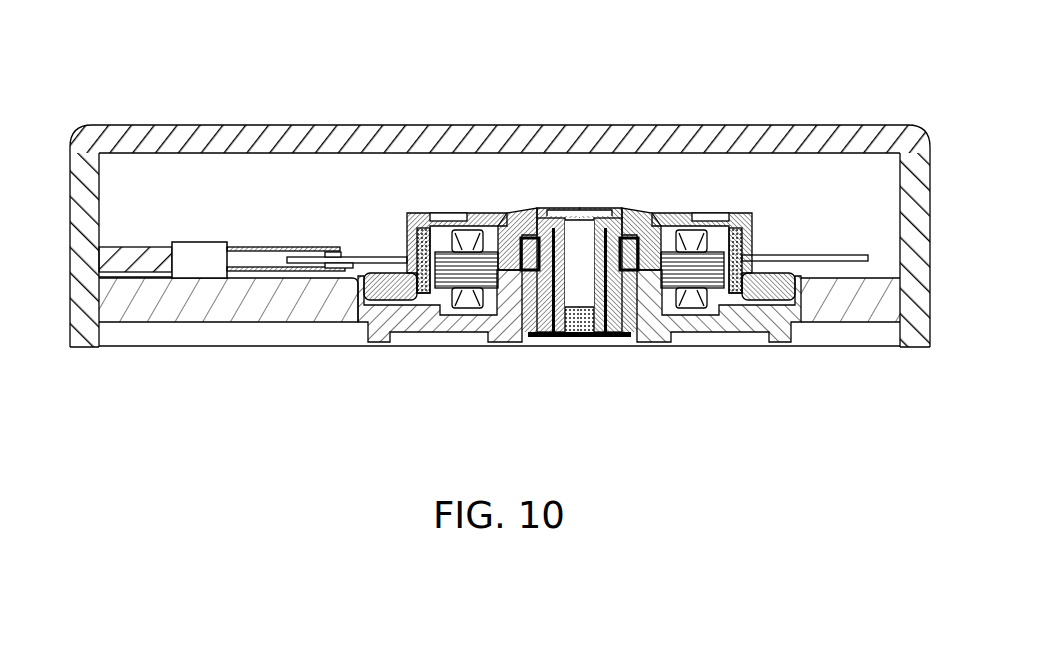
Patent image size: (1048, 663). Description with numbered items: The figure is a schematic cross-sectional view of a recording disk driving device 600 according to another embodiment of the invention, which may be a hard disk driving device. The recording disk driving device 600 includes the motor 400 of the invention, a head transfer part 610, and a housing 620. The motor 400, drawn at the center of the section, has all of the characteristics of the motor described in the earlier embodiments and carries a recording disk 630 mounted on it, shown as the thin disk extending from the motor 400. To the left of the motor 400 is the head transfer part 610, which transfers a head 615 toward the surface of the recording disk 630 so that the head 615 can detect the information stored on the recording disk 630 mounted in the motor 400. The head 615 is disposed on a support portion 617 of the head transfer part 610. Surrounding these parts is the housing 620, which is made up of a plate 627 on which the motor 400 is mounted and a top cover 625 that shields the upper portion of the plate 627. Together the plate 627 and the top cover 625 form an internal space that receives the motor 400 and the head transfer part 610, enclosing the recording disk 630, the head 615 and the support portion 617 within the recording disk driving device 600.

The recording disk driving device 600 is at (336, 38).
The motor 400 is at (383, 219).
The head transfer part 610 is at (253, 329).
The head 615 is at (327, 275).
The support portion 617 is at (262, 279).
The housing 620 is at (544, 204).
The top cover 625 is at (505, 140).
The plate 627 is at (927, 300).
The recording disk 630 is at (795, 257).